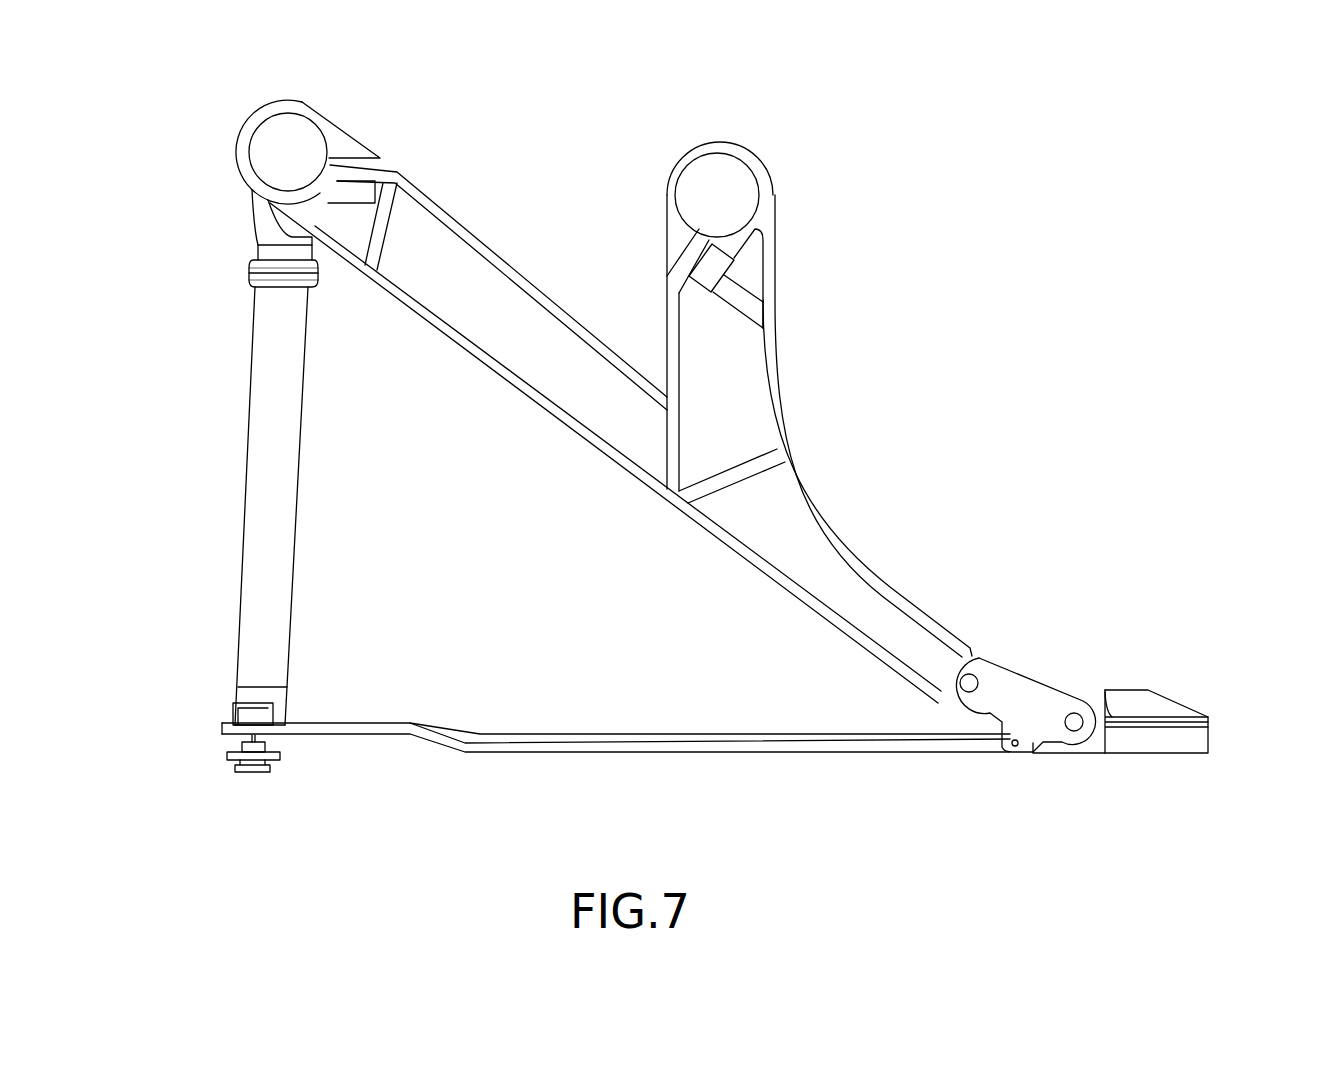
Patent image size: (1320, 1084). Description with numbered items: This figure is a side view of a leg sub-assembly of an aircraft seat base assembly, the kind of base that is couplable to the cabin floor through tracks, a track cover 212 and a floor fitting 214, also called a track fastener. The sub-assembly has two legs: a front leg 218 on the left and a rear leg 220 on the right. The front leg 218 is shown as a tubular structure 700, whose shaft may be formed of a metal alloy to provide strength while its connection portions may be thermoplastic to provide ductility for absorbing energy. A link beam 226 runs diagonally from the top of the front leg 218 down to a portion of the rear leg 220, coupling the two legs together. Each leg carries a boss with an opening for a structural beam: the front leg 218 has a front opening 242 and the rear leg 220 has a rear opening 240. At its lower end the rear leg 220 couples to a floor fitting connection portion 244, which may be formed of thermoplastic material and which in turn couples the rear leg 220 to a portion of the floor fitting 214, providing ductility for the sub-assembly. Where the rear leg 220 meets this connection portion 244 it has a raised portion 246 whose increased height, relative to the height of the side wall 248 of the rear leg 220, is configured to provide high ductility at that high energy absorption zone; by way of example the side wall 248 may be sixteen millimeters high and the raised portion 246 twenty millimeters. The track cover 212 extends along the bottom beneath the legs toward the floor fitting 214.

The track cover 212 is at (440, 752).
The floor fitting 214 is at (1185, 693).
The front leg 218 is at (222, 425).
The rear leg 220 is at (822, 388).
The link beam 226 is at (537, 232).
The opening 240 is at (721, 176).
The opening 242 is at (293, 127).
The floor fitting connection portion 244 is at (1030, 698).
The raised portion 246 is at (983, 652).
The side wall 248 is at (865, 592).
The tubular structure 700 is at (262, 362).